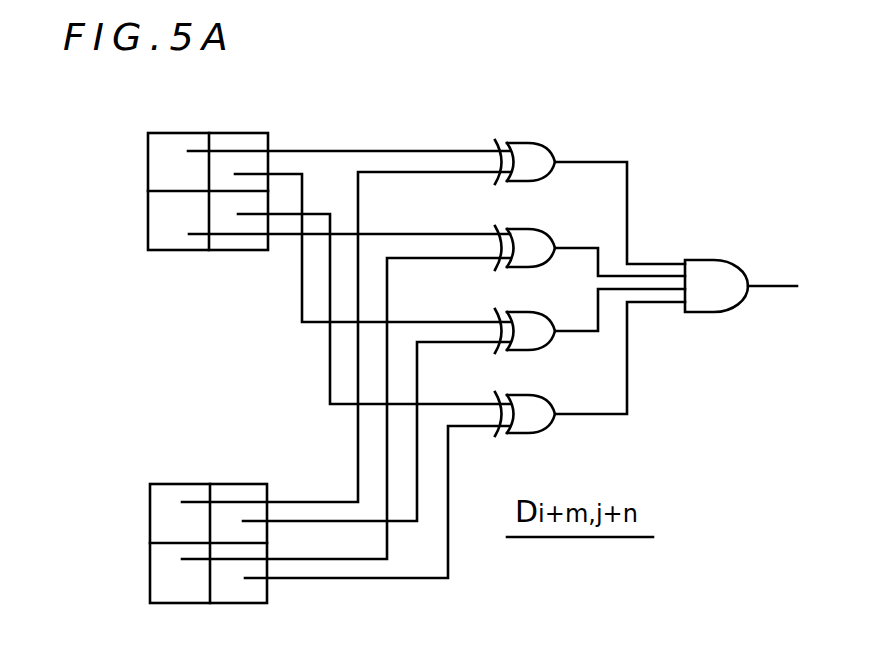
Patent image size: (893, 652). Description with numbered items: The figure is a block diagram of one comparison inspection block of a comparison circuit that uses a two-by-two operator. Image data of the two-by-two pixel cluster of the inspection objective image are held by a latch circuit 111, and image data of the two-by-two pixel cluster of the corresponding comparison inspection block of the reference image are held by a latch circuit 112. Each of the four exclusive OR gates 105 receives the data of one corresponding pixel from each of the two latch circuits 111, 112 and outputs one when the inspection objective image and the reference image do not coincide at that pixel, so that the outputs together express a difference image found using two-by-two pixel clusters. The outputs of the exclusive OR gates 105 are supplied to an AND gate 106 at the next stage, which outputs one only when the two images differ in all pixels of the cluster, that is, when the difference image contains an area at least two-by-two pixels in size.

The exclusive OR gate 105 is at (545, 142).
The AND gate 106 is at (714, 258).
The latch circuit 111 is at (142, 160).
The latch circuit 112 is at (142, 510).